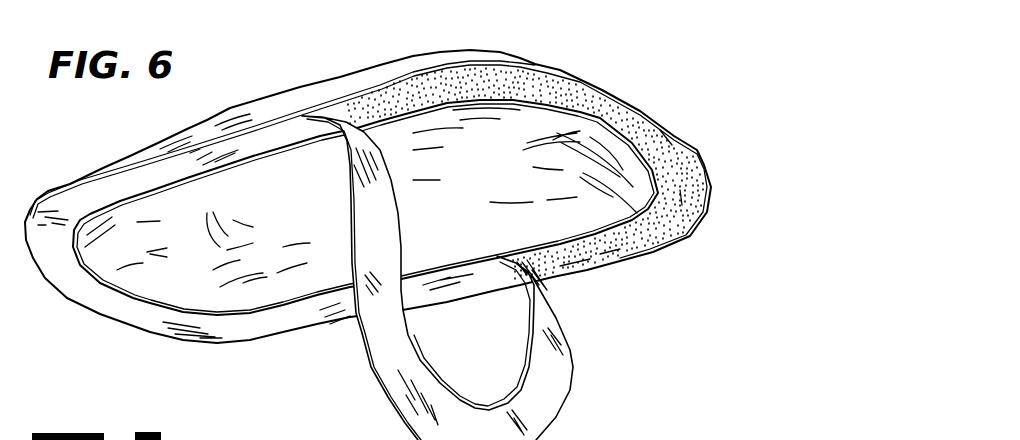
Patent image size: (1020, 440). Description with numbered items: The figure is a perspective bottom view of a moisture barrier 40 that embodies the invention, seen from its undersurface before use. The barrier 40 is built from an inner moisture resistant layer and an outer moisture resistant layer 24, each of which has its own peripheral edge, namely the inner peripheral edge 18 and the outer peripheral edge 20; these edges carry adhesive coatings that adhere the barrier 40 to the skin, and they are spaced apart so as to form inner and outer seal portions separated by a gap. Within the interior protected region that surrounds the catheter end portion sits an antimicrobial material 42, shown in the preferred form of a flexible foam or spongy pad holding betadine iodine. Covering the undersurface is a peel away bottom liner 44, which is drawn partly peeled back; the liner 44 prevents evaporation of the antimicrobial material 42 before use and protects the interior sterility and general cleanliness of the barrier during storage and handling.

The peripheral edge 18 is at (668, 183).
The peripheral edge 20 is at (672, 130).
The outer moisture resistant layer 24 is at (301, 97).
The moisture barrier 40 is at (383, 175).
The antimicrobial material 42 is at (466, 161).
The peel away bottom liner 44 is at (556, 370).